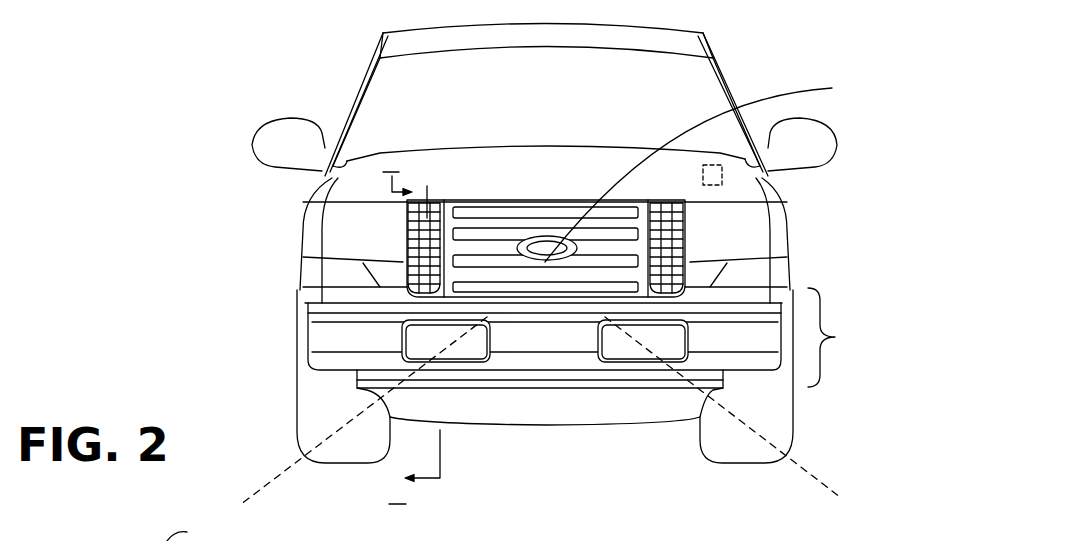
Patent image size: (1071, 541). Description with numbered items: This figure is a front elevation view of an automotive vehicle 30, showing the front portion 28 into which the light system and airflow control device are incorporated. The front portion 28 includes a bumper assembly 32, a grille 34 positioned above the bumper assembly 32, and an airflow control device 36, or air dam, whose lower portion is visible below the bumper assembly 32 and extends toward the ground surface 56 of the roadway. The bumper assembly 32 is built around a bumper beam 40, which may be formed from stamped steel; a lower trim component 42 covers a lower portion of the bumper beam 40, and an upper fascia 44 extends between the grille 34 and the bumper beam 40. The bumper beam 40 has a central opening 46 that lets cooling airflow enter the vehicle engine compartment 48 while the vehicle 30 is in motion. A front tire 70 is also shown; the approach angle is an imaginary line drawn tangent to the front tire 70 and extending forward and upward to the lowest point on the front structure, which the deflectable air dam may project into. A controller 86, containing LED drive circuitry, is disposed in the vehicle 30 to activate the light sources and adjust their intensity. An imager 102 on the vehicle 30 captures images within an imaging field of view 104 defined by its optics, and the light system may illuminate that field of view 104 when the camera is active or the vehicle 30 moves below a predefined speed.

The automotive vehicle 30 is at (536, 268).
The imager 102 is at (545, 262).
The controller 86 is at (724, 176).
The grille 34 is at (683, 248).
The upper fascia 44 is at (740, 295).
The bumper assembly 32 is at (841, 337).
The front tire 70 is at (763, 418).
The airflow control device 36 is at (668, 423).
The central opening 46 is at (563, 340).
The ground surface 56 is at (364, 509).
The imaging field of view 104 is at (293, 460).
The lower trim component 42 is at (342, 375).
The bumper beam 40 is at (529, 329).
The front portion 28 is at (340, 275).
The vehicle engine compartment 48 is at (427, 186).